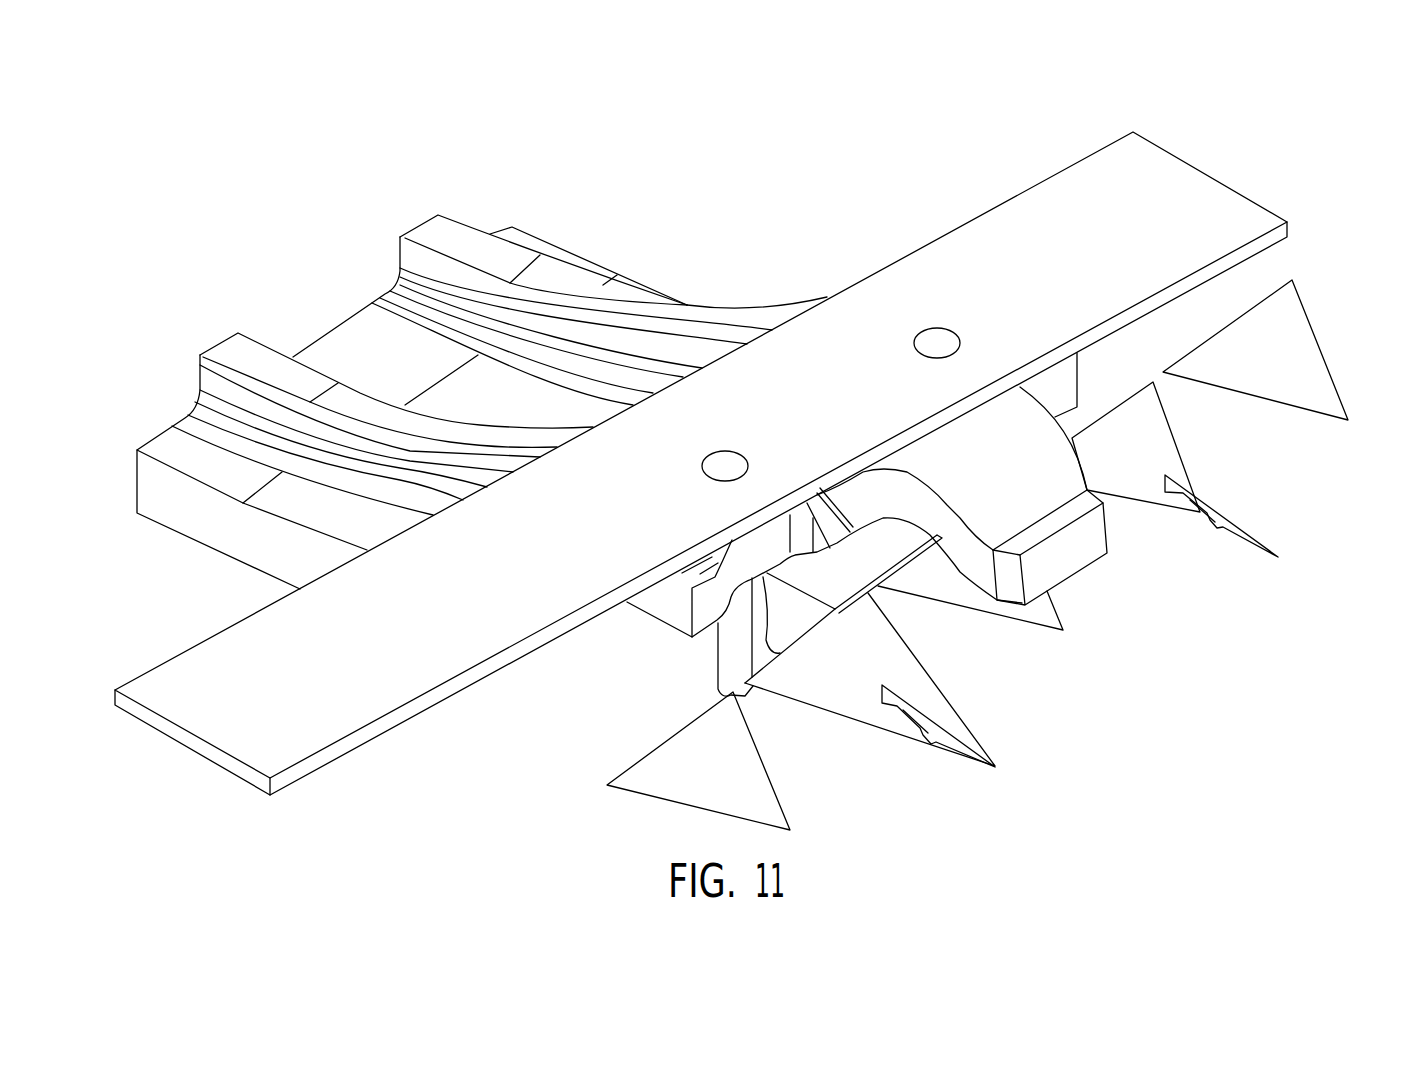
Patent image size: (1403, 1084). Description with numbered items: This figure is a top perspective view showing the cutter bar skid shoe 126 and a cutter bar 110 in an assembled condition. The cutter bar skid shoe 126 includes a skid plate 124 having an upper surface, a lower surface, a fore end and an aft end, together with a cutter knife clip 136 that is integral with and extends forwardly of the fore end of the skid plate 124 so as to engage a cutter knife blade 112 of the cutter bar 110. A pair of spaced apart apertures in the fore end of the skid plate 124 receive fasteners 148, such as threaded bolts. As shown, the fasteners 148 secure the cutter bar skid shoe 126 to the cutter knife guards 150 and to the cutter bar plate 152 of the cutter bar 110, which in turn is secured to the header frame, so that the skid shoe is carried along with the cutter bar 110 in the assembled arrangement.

The cutter bar 110 is at (1245, 652).
The cutter knife blade 112 is at (1300, 348).
The skid plate 124 is at (745, 304).
The cutter bar skid shoe 126 is at (632, 250).
The cutter knife clip 136 is at (1000, 486).
The fasteners 148 is at (942, 340).
The cutter knife guards 150 is at (1262, 547).
The cutter bar plate 152 is at (1163, 197).